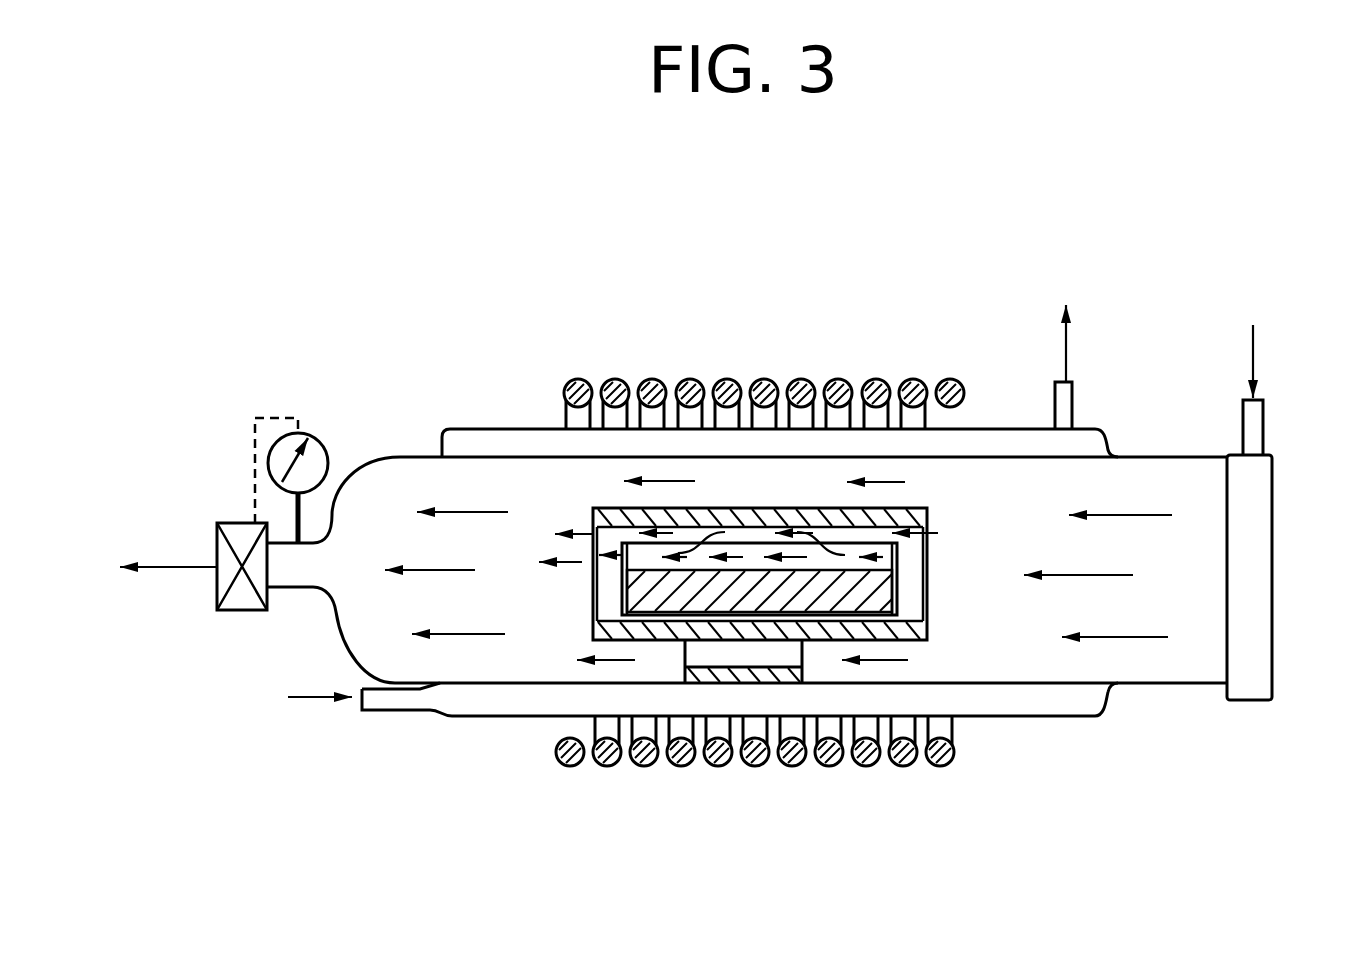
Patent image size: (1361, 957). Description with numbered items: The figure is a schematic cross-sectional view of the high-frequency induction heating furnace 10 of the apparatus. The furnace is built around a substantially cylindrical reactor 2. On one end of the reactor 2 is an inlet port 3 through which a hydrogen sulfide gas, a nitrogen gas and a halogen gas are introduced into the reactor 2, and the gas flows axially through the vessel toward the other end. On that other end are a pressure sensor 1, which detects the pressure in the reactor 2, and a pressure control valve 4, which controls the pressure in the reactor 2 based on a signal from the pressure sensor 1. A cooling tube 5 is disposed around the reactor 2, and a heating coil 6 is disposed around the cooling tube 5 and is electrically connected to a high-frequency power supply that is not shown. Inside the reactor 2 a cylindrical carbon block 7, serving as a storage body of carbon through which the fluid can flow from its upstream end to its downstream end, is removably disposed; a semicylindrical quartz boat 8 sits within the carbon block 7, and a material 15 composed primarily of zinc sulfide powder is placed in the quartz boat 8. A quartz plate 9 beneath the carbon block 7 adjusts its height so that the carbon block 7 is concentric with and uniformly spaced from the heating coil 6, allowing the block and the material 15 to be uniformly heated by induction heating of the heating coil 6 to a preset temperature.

The pressure sensor 1 is at (322, 437).
The reactor 2 is at (402, 455).
The inlet port 3 is at (1263, 420).
The pressure control valve 4 is at (243, 523).
The cooling tube 5 is at (507, 443).
The heating coil 6 is at (655, 378).
The carbon block 7 is at (592, 638).
The quartz boat 8 is at (759, 545).
The quartz plate 9 is at (684, 647).
The high-frequency induction heating furnace 10 is at (860, 323).
The material 15 is at (822, 590).